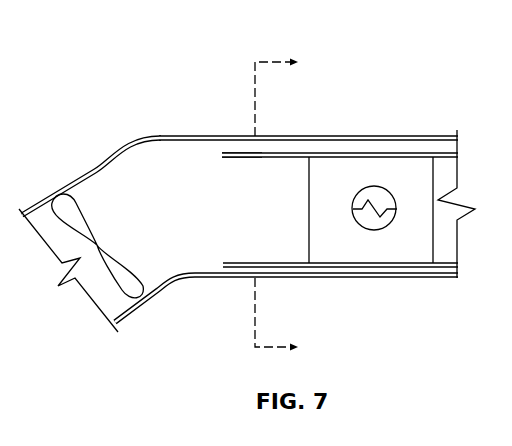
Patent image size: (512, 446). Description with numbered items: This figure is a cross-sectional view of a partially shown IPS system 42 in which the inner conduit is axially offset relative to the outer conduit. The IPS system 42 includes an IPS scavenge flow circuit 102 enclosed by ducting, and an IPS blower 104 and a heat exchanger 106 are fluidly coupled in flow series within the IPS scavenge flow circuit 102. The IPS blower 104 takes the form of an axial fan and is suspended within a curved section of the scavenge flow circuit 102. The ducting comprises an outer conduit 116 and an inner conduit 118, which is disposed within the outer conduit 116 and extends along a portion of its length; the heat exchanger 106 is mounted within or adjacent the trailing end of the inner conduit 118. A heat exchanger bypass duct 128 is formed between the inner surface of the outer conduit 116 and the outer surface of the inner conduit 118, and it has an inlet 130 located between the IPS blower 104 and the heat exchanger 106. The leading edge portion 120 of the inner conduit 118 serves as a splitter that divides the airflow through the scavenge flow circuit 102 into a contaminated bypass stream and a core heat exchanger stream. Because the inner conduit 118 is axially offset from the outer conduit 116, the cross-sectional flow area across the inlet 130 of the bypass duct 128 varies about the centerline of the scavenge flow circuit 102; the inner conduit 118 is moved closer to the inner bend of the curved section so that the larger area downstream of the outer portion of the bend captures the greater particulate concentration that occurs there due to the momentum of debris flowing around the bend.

The IPS system 42 is at (108, 64).
The IPS scavenge flow circuit 102 is at (135, 182).
The IPS blower 104 is at (68, 200).
The heat exchanger 106 is at (415, 253).
The outer conduit 116 is at (331, 137).
The inner conduit 118 is at (380, 151).
The leading edge portion 120 is at (232, 270).
The heat exchanger bypass duct 128 is at (440, 148).
The inlet 130 is at (236, 152).